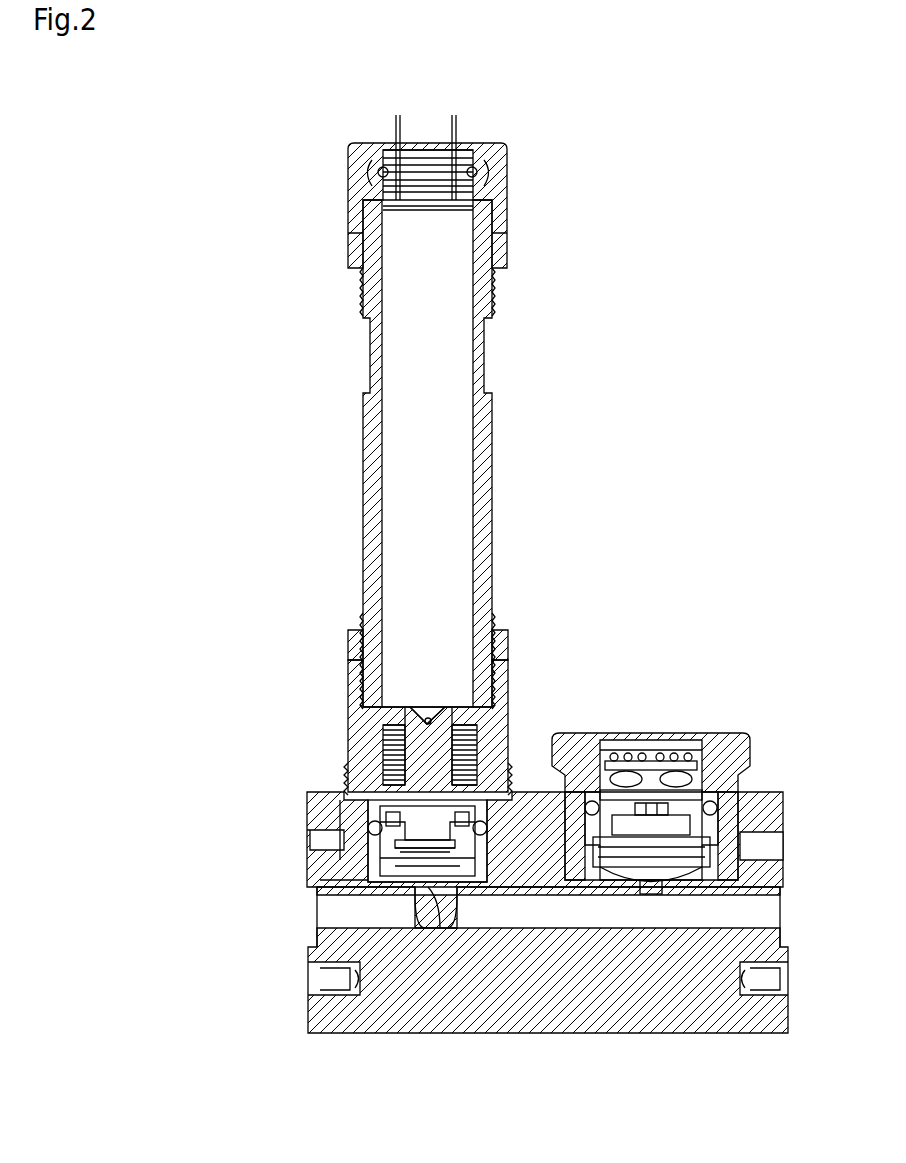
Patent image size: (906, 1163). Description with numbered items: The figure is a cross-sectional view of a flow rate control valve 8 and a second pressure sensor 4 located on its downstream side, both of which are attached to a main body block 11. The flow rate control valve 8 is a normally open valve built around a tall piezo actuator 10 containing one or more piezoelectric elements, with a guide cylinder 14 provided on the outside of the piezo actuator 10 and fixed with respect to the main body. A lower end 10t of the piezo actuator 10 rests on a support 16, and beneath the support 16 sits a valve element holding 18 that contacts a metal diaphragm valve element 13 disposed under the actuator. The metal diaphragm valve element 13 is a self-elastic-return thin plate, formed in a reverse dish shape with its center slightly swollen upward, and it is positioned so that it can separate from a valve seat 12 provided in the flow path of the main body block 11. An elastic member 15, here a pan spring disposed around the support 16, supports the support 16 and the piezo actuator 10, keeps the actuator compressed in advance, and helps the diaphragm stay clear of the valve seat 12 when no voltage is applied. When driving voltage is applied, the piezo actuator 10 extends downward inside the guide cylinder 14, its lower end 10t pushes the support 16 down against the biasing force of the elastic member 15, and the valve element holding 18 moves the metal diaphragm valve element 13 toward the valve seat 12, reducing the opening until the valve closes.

The second pressure sensor 4 is at (707, 712).
The flow rate control valve 8 is at (272, 223).
The piezo actuator 10 is at (410, 512).
The lower end of the piezo actuator 10t is at (423, 713).
The main body block 11 is at (483, 1000).
The valve seat 12 is at (418, 890).
The metal diaphragm valve element 13 is at (415, 887).
The guide cylinder 14 is at (492, 297).
The elastic member 15 is at (470, 733).
The support 16 is at (440, 726).
The valve element holding 18 is at (432, 804).